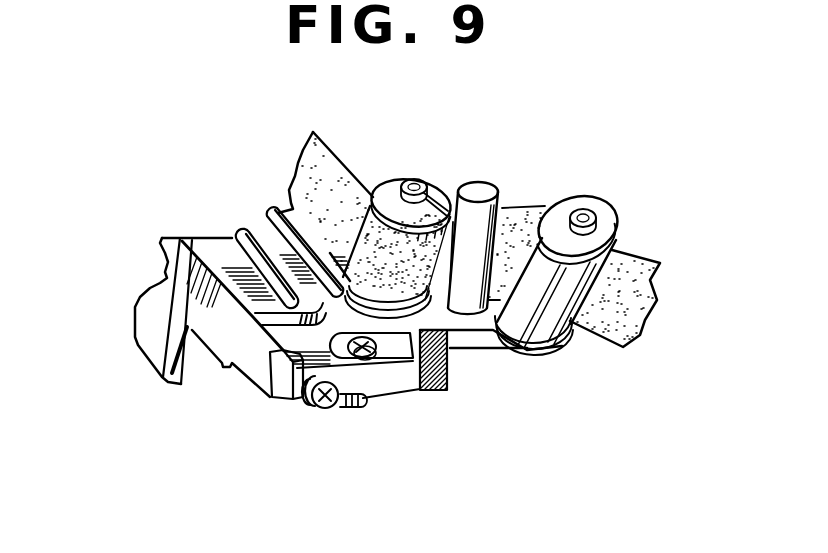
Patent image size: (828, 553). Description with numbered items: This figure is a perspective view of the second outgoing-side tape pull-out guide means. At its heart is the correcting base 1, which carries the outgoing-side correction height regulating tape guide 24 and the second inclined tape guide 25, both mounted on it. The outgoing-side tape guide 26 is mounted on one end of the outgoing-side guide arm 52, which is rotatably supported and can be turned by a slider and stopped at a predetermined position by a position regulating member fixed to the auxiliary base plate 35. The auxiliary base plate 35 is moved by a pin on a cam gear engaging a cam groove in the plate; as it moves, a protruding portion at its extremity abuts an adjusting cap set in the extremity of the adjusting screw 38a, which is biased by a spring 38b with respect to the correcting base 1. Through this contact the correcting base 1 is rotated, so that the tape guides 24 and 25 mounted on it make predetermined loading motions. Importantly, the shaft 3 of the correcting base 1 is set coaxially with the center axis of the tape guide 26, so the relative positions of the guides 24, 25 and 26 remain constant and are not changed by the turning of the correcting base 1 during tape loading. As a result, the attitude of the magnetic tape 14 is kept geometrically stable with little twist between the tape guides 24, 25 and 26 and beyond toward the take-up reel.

The correcting base 1 is at (442, 384).
The shaft 3 is at (363, 405).
The magnetic tape 14 is at (524, 215).
The outgoing-side correction height regulating tape guide 24 is at (580, 320).
The second inclined tape guide 25 is at (480, 188).
The outgoing-side tape guide 26 is at (385, 187).
The auxiliary base plate 35 is at (177, 282).
The adjusting screw 38a is at (329, 408).
The spring 38b is at (302, 398).
The outgoing-side guide arm 52 is at (285, 207).